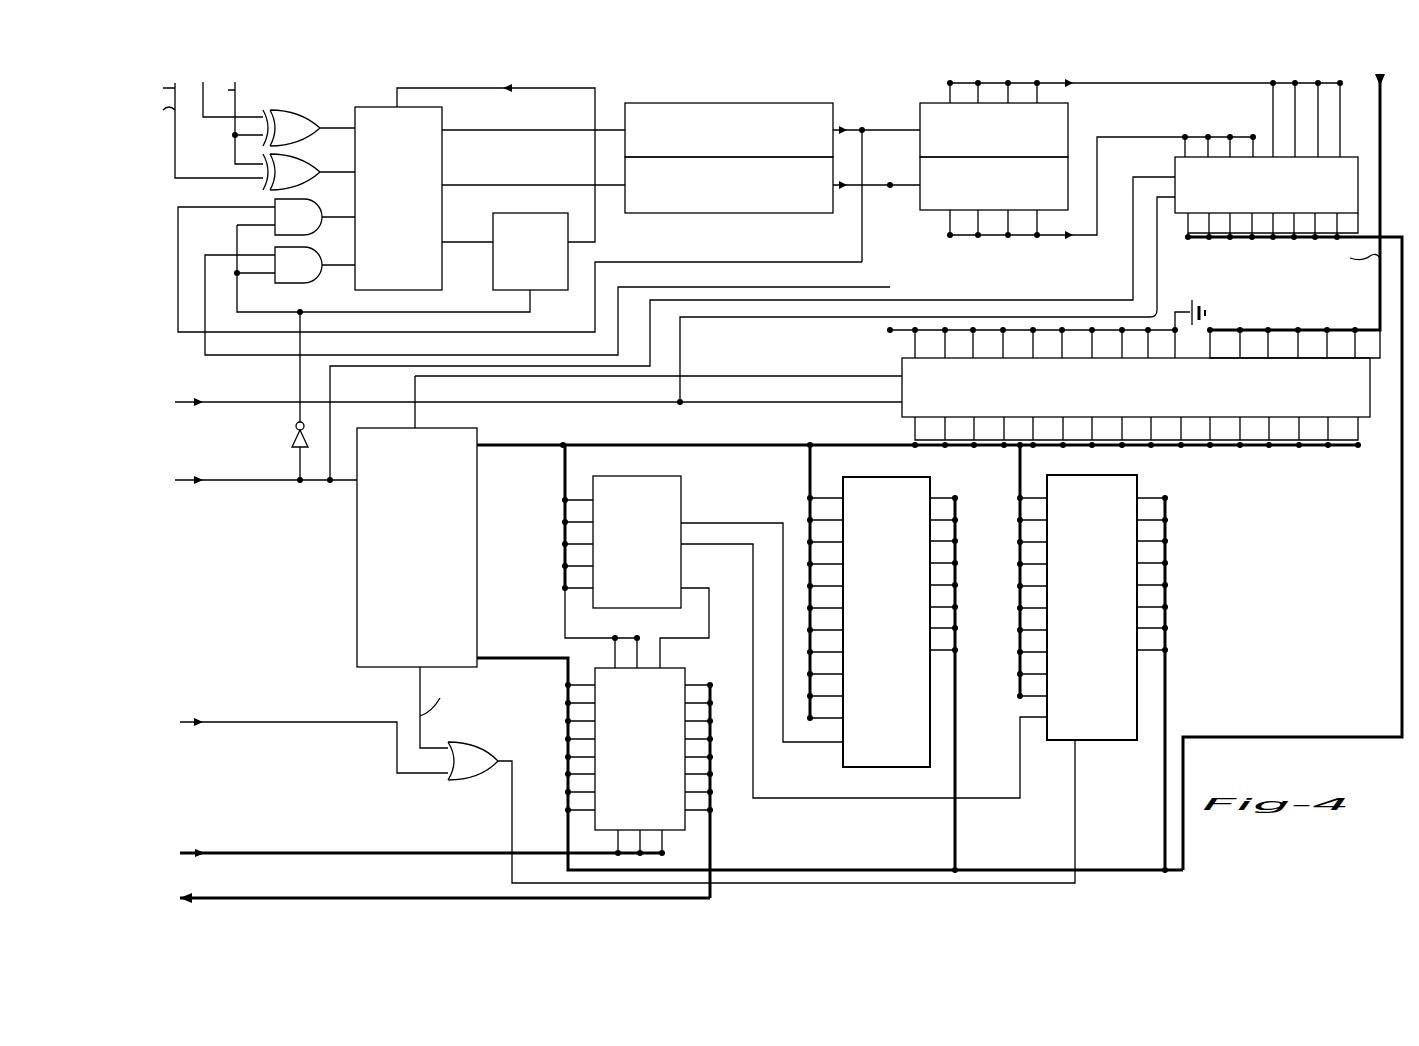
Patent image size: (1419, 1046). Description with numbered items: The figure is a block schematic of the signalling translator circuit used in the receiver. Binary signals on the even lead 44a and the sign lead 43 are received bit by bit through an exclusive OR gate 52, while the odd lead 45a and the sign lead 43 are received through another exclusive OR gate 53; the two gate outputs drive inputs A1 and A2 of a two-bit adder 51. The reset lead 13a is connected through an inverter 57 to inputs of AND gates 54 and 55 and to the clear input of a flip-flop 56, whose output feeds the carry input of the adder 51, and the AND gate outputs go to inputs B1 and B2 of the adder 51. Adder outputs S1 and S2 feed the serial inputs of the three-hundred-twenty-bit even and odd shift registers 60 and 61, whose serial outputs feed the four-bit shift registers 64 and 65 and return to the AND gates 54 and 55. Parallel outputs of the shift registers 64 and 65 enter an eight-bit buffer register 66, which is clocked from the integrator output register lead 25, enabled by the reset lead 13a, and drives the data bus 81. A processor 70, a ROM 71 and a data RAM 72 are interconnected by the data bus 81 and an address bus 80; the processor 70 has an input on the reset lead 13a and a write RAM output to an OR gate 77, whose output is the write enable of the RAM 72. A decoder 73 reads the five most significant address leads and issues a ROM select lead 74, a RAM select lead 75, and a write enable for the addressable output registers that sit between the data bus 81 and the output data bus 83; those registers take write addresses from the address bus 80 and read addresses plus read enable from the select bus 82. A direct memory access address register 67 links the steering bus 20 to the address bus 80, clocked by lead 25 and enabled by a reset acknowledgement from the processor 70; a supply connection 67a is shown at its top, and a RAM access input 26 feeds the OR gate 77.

The sign lead 43 is at (240, 104).
The even lead 44a is at (222, 119).
The odd lead 45a is at (220, 180).
The two-bit adder 51 is at (442, 267).
The exclusive OR gate 52 is at (318, 112).
The exclusive OR gate 53 is at (302, 159).
The AND gate 54 is at (304, 208).
The AND gate 55 is at (305, 256).
The flip-flop 56 is at (493, 222).
The 320-bit even shift register 60 is at (737, 103).
The 320-bit odd shift register 61 is at (710, 216).
The four-bit shift register 64 is at (920, 115).
The four-bit shift register 65 is at (928, 212).
The 8-bit buffer register 66 is at (1175, 166).
The steering bus 20 is at (1380, 160).
The data bus 81 is at (1402, 237).
The direct memory access address register 67 is at (902, 365).
The voltage supply connection 67a is at (1160, 330).
The integrator output register lead 25 is at (250, 412).
The inverter 57 is at (296, 436).
The reset lead 13a is at (226, 485).
The processor 70 is at (477, 530).
The decoder 73 is at (623, 490).
The ROM select lead 74 is at (769, 516).
The RAM select lead 75 is at (712, 549).
The address bus 80 is at (777, 441).
The ROM 71 is at (899, 479).
The data random access memory 72 is at (1105, 467).
The RAM access line 26 is at (256, 717).
The OR gate 77 is at (482, 748).
The select bus 82 is at (445, 849).
The output data bus 83 is at (450, 897).